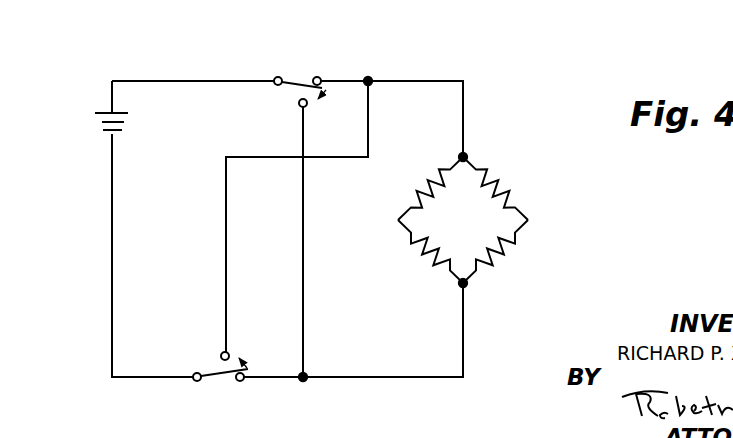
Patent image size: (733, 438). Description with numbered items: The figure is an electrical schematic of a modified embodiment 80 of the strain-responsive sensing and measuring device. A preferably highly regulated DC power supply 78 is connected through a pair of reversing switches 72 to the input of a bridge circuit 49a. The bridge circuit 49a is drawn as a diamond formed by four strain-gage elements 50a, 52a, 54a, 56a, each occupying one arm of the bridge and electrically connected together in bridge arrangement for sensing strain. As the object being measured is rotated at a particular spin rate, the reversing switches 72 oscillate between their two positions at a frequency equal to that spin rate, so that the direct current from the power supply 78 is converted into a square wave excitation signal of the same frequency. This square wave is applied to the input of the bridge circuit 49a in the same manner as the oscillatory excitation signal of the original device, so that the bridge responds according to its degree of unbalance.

The reversing switches 72 is at (300, 78).
The DC power supply 78 is at (128, 116).
The modified embodiment 80 is at (387, 68).
The bridge circuit 49a is at (484, 212).
The strain-gage element 50a is at (421, 193).
The strain-gage element 52a is at (500, 185).
The strain-gage element 54a is at (421, 251).
The strain-gage element 56a is at (498, 258).